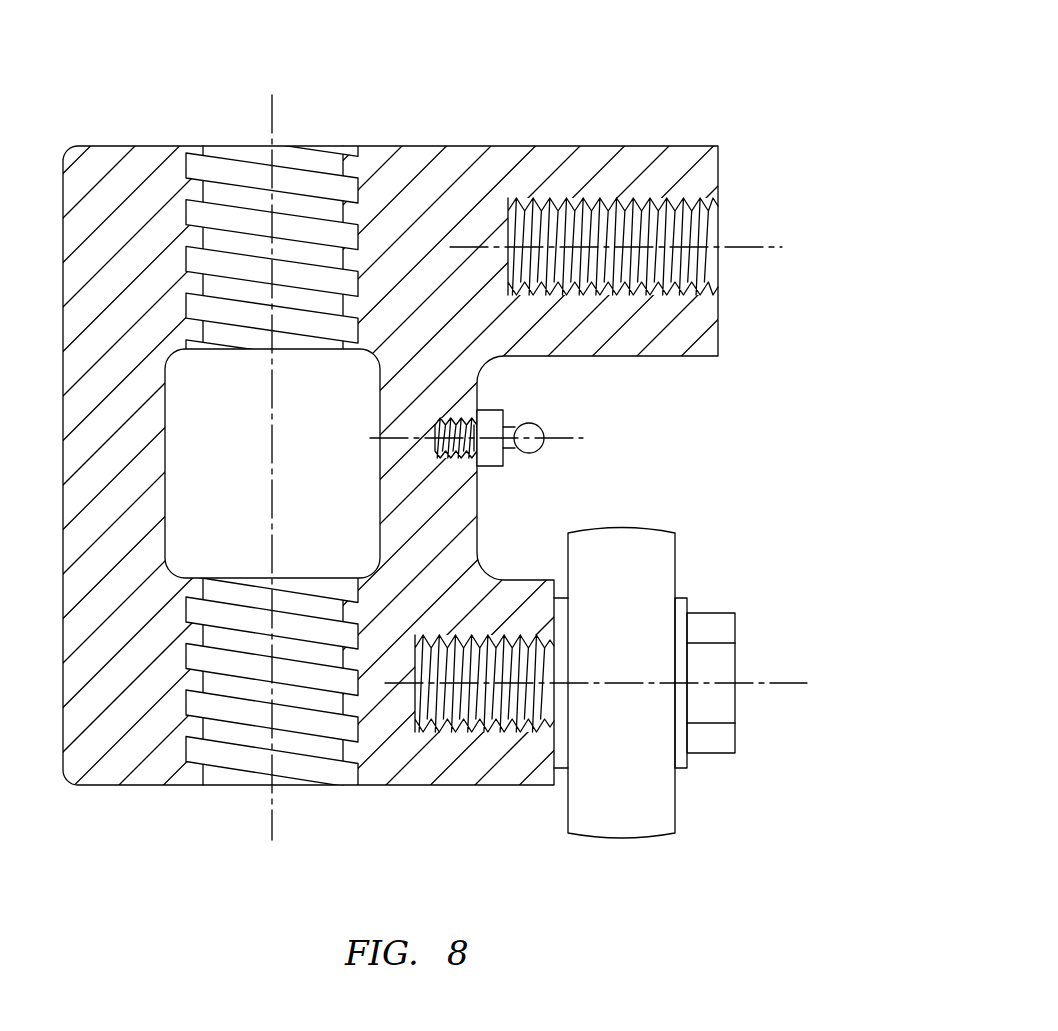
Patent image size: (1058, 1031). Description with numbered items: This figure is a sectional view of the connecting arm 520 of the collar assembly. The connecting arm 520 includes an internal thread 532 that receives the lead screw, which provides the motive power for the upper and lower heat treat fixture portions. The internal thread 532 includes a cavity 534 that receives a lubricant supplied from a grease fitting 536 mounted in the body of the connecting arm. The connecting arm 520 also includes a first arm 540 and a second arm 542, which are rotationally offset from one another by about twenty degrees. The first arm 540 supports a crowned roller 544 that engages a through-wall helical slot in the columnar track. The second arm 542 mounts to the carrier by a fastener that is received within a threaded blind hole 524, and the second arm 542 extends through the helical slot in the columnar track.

The connecting arm 520 is at (529, 451).
The threaded blind hole 524 is at (672, 264).
The internal thread 532 is at (342, 242).
The cavity 534 is at (253, 444).
The grease fitting 536 is at (494, 428).
The first arm 540 is at (470, 765).
The second arm 542 is at (680, 163).
The crowned roller 544 is at (622, 806).